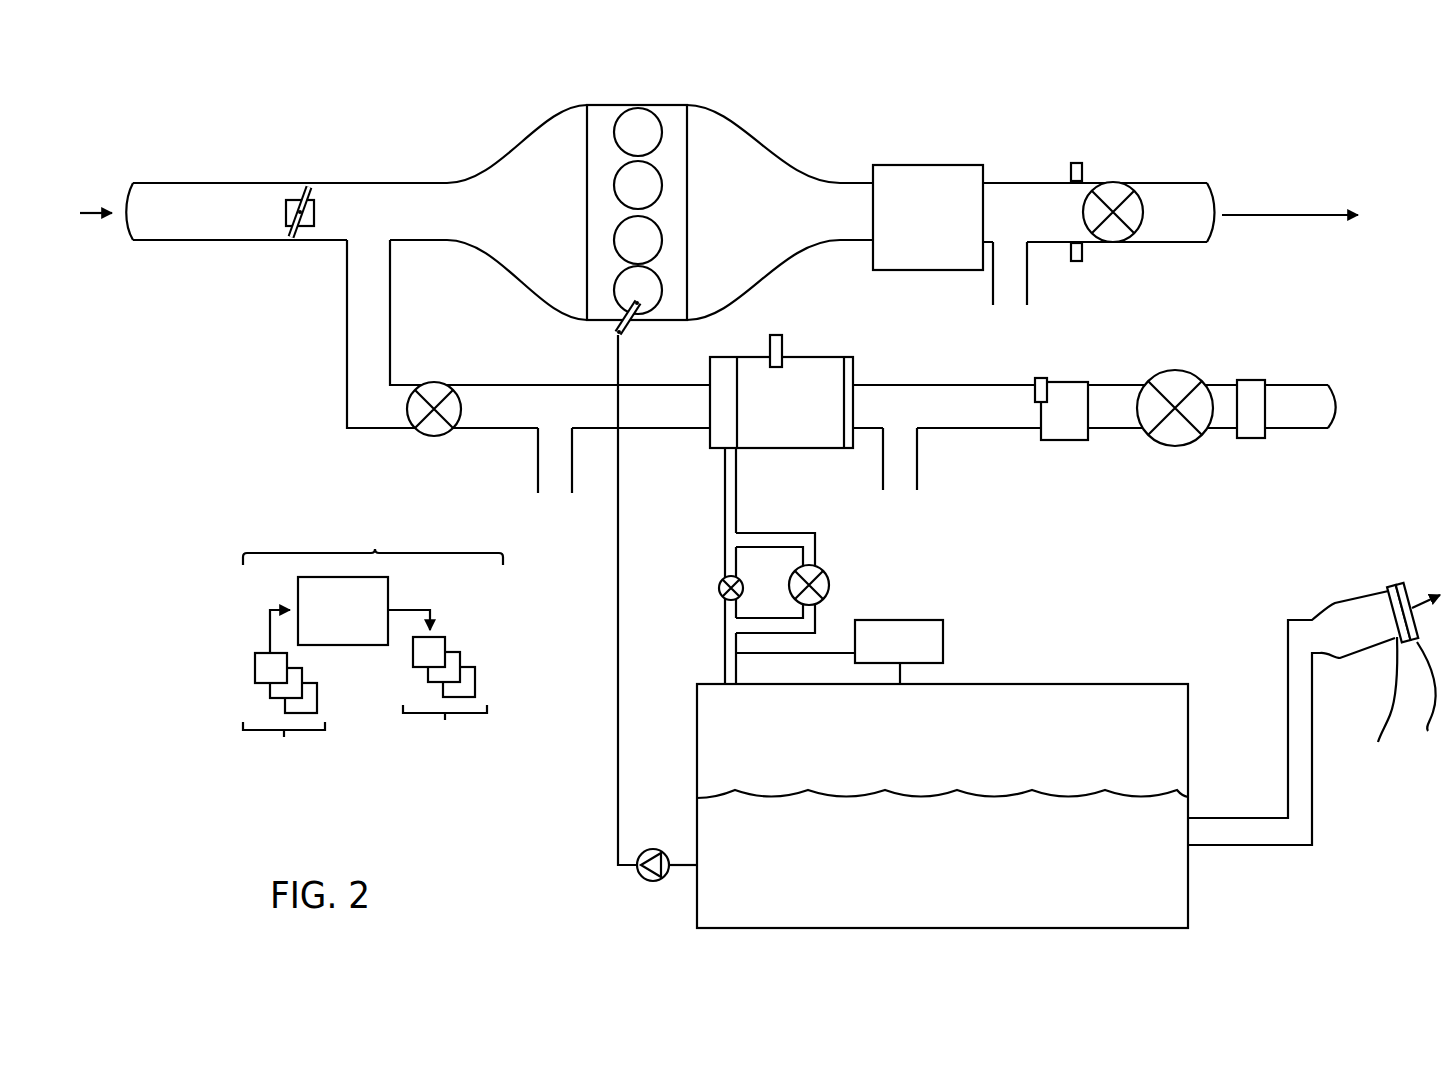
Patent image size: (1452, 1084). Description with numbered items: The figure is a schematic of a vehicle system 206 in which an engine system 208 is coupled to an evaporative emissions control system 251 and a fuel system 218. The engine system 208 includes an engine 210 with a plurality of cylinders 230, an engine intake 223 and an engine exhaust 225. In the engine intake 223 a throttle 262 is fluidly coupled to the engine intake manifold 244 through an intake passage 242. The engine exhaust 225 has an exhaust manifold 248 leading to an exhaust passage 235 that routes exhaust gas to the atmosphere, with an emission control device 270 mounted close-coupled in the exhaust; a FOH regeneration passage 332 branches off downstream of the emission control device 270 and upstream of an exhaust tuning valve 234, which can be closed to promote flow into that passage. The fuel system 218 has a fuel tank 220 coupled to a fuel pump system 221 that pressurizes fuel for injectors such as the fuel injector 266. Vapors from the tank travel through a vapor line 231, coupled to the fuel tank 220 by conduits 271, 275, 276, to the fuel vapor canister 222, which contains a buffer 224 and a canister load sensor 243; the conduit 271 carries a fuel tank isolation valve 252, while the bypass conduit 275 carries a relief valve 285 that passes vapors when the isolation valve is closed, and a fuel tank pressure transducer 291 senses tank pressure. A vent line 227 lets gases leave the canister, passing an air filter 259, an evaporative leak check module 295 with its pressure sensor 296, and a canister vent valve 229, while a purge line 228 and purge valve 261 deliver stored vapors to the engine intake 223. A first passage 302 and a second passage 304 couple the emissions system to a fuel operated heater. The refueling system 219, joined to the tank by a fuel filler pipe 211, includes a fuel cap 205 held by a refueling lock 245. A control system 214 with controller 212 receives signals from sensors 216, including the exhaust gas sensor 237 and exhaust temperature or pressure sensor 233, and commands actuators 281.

The vehicle system 206 is at (163, 120).
The intake passage 242 is at (335, 243).
The engine intake 223 is at (507, 127).
The engine intake manifold 244 is at (517, 259).
The throttle 262 is at (316, 206).
The engine 210 is at (687, 195).
The cylinders 230 is at (638, 132).
The exhaust manifold 248 is at (763, 212).
The engine exhaust 225 is at (868, 112).
The emission control device 270 is at (928, 150).
The engine system 208 is at (1088, 127).
The FOH regeneration passage 332 is at (992, 285).
The exhaust passage 235 is at (1157, 183).
The exhaust gas sensor 237 is at (1071, 175).
The exhaust temperature or pressure sensor 233 is at (1071, 250).
The exhaust tuning valve 234 is at (1130, 236).
The purge line 228 is at (528, 334).
The first passage 302 is at (538, 462).
The purge valve 261 is at (435, 383).
The fuel injector 266 is at (629, 322).
The vapor line 231 is at (692, 556).
The fuel vapor canister 222 is at (848, 357).
The buffer 224 is at (727, 372).
The canister load sensor 243 is at (782, 335).
The vent line 227 is at (1094, 406).
The second passage 304 is at (917, 476).
The evaporative leak check module 295 is at (1060, 382).
The pressure sensor 296 is at (1040, 378).
The canister vent valve 229 is at (1176, 370).
The air filter 259 is at (1250, 380).
The evaporative emissions control system 251 is at (1240, 330).
The conduit 276 is at (725, 497).
The bypass conduit 275 is at (815, 535).
The relief valve 285 is at (823, 585).
The fuel tank isolation valve 252 is at (720, 592).
The conduit 271 is at (725, 633).
The fuel tank pressure transducer 291 is at (943, 620).
The fuel tank 220 is at (1190, 788).
The fuel system 218 is at (1243, 888).
The fuel pump system 221 is at (652, 850).
The fuel filler pipe 211 is at (1313, 735).
The refueling system 219 is at (1320, 592).
The fuel cap 205 is at (1428, 731).
The refueling lock 245 is at (1378, 742).
The control system 214 is at (373, 533).
The controller 212 is at (343, 611).
The sensors 216 is at (284, 696).
The actuators 281 is at (437, 687).